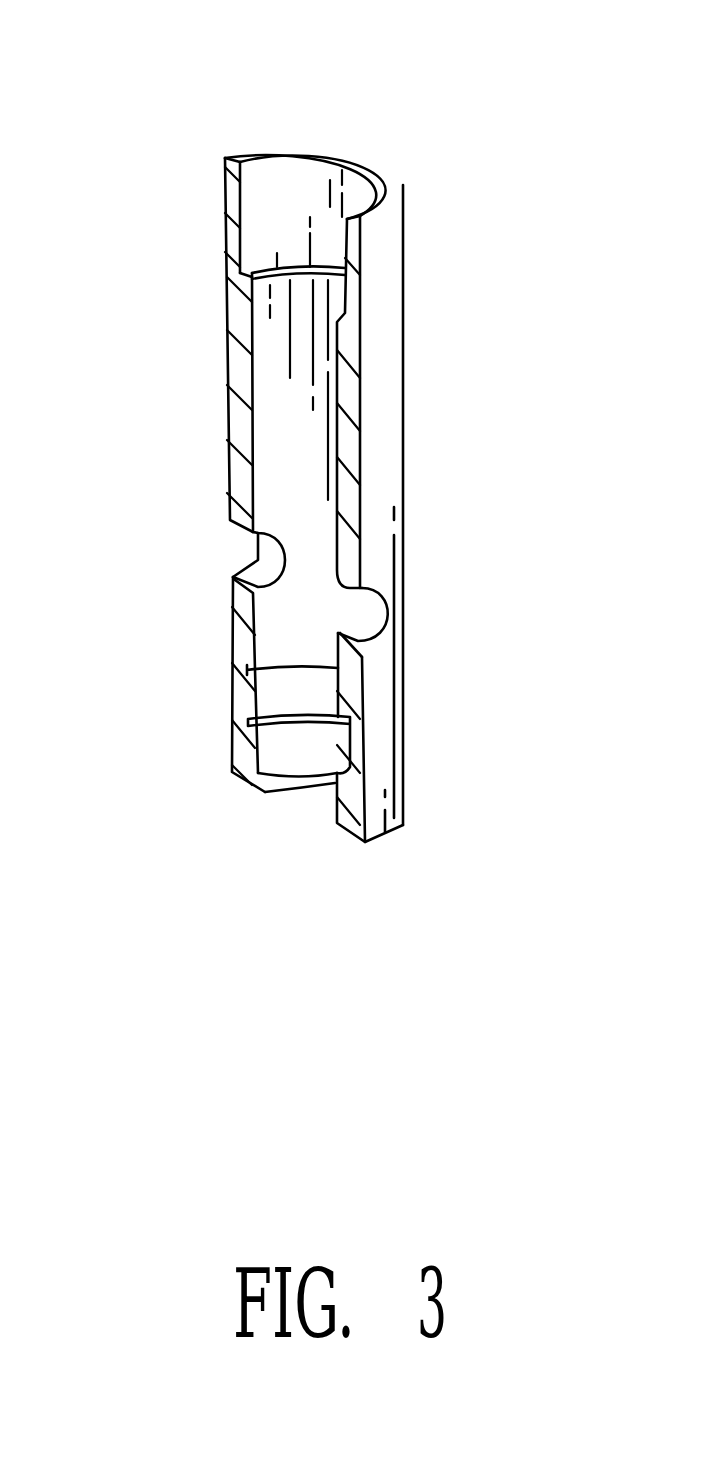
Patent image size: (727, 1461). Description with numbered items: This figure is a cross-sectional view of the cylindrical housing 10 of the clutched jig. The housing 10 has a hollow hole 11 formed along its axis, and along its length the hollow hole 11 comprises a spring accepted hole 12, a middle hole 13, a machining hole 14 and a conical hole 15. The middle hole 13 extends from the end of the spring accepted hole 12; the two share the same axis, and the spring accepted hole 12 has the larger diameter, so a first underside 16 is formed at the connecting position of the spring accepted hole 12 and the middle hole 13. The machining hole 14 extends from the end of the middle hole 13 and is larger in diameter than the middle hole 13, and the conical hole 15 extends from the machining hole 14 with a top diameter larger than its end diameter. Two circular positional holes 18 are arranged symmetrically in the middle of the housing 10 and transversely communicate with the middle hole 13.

The housing 10 is at (456, 288).
The hollow hole 11 is at (317, 183).
The spring accepted hole 12 is at (265, 213).
The middle hole 13 is at (273, 363).
The machining hole 14 is at (265, 695).
The conical hole 15 is at (283, 755).
The first underside 16 is at (252, 273).
The positional holes 18 is at (265, 562).